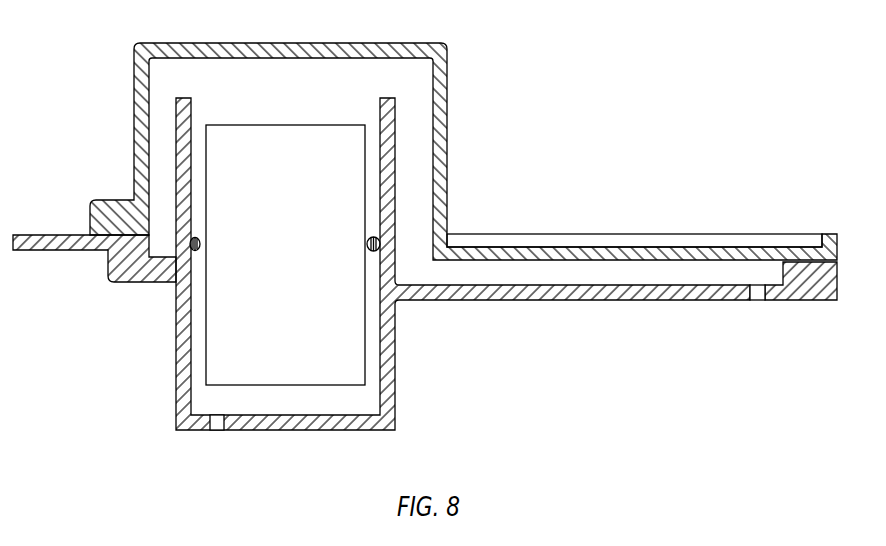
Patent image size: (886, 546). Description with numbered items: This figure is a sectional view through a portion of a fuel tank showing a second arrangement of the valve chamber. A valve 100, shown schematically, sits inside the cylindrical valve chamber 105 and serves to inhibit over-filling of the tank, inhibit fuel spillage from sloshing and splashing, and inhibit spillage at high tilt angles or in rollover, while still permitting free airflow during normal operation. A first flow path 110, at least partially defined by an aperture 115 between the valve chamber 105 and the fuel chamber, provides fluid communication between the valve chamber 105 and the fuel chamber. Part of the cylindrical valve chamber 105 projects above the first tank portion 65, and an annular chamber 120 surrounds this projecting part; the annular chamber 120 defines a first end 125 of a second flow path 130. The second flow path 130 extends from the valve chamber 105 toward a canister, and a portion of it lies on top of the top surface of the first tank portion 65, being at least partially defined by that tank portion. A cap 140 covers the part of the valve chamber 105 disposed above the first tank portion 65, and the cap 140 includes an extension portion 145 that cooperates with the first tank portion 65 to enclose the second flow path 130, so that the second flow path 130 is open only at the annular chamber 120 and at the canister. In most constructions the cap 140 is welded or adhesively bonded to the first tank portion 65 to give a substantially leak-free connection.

The first tank portion 65 is at (50, 247).
The valve 100 is at (302, 251).
The valve chamber 105 is at (385, 363).
The first flow path 110 is at (218, 429).
The aperture 115 is at (212, 428).
The annular chamber 120 is at (413, 156).
The first end 125 is at (410, 238).
The second flow path 130 is at (620, 273).
The cap 140 is at (446, 46).
The extension portion 145 is at (770, 235).